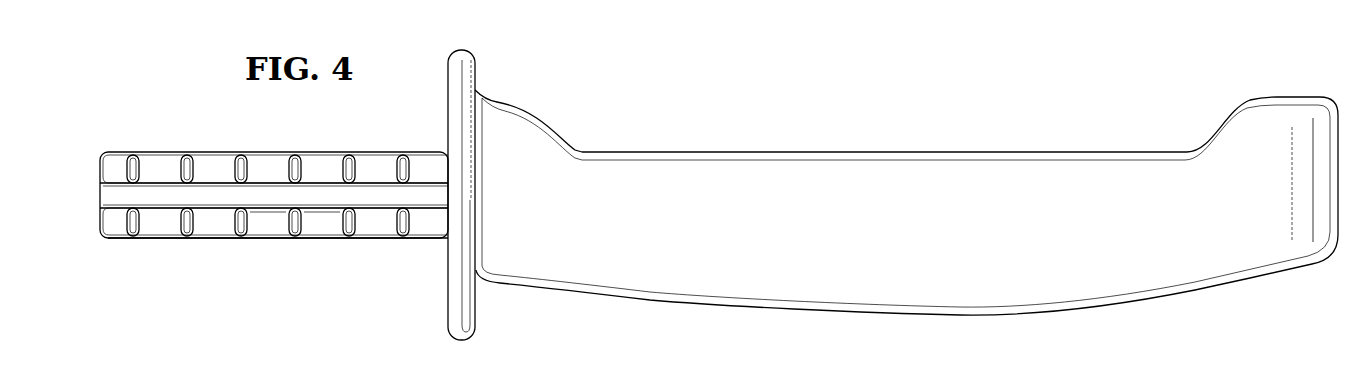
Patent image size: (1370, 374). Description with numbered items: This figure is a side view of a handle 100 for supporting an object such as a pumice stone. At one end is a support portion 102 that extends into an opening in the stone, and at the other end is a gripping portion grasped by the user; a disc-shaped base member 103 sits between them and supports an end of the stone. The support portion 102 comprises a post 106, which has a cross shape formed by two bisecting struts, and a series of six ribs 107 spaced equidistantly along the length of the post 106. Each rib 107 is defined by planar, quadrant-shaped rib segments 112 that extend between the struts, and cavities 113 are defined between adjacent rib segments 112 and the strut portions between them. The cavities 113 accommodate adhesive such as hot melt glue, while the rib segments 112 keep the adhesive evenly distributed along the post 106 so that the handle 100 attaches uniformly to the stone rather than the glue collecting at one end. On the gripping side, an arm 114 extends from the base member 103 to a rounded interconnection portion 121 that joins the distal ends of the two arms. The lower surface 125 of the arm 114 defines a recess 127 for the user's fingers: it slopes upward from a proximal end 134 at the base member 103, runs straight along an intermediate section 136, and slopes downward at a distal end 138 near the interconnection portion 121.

The handle 100 is at (848, 83).
The support portion 102 is at (333, 132).
The base member 103 is at (460, 87).
The post 106 is at (100, 196).
The rib 107 is at (135, 238).
The rib segment 112 is at (242, 160).
The cavity 113 is at (320, 225).
The arm 114 is at (930, 245).
The interconnection portion 121 is at (1320, 157).
The lower surface 125 is at (673, 152).
The recess 127 is at (923, 138).
The proximal end 134 is at (520, 122).
The intermediate section 136 is at (790, 152).
The distal end 138 is at (1232, 124).